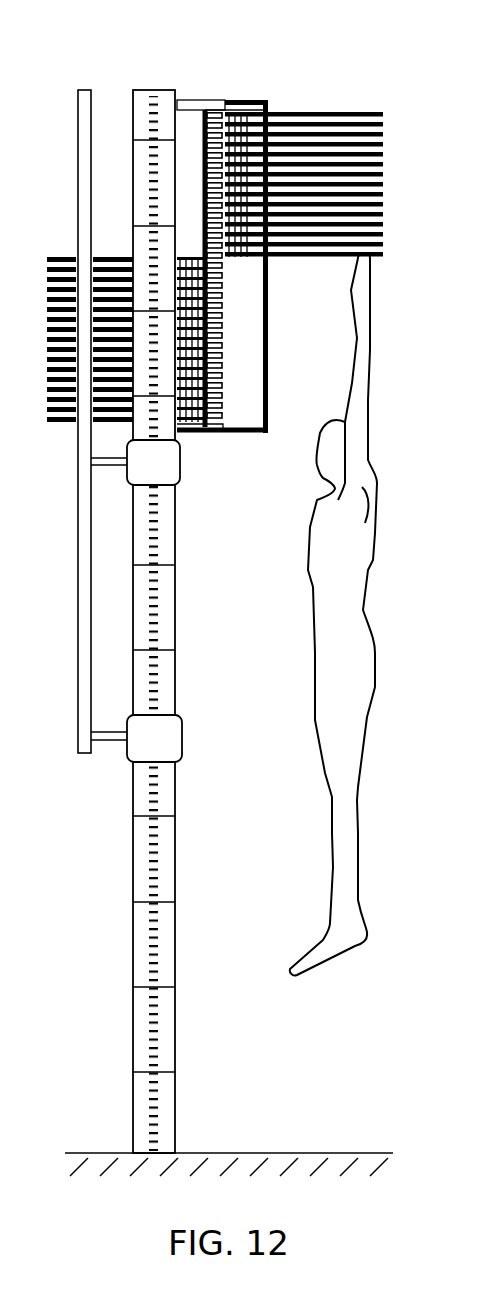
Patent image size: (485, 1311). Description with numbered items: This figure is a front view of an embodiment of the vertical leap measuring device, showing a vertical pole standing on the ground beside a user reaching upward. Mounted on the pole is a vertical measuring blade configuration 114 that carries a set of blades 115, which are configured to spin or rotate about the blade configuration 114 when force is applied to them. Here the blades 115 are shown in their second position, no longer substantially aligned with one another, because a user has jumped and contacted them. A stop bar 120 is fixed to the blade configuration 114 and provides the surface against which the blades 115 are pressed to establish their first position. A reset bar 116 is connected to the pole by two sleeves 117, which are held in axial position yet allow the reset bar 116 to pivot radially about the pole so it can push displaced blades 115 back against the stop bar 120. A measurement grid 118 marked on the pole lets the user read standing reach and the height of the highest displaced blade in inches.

The vertical measuring blade configuration 114 is at (192, 100).
The blades 115 is at (335, 105).
The reset bar 116 is at (82, 147).
The sleeves 117 is at (172, 462).
The measurement grid 118 is at (145, 818).
The stop bar 120 is at (250, 100).